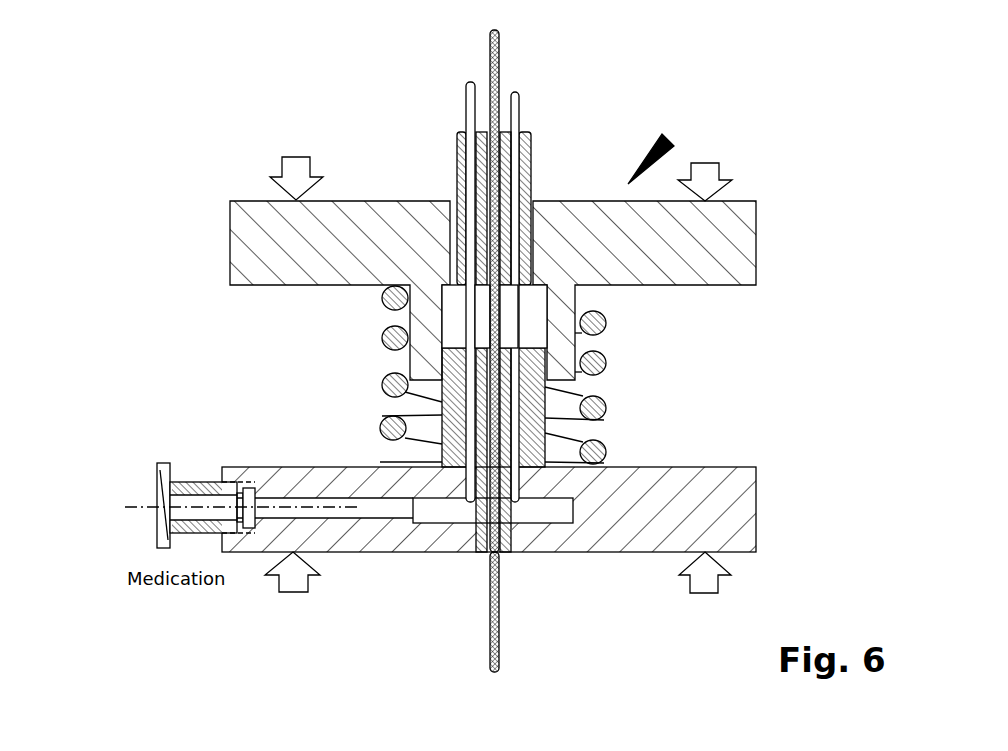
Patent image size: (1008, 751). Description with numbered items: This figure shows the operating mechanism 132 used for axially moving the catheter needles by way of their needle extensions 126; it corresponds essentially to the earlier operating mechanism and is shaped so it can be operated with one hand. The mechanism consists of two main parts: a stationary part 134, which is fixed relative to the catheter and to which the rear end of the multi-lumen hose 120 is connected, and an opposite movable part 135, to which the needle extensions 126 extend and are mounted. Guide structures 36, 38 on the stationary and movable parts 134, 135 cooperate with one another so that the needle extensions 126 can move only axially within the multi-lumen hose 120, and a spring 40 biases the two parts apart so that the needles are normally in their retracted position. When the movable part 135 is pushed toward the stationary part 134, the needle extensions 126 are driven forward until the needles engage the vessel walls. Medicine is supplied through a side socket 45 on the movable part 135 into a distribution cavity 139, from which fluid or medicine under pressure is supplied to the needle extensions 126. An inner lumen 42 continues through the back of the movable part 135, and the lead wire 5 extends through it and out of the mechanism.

The lead wire 5 is at (488, 50).
The needle extensions 126 is at (473, 105).
The multi-lumen hose 120 is at (531, 168).
The operating mechanism 132 is at (666, 143).
The stationary part 134 is at (713, 240).
The spring 40 is at (383, 385).
The guide structure 36 is at (568, 334).
The guide structure 38 is at (542, 433).
The side socket 45 is at (190, 483).
The movable part 135 is at (735, 488).
The distribution cavity 139 is at (428, 512).
The inner lumen 42 is at (498, 555).